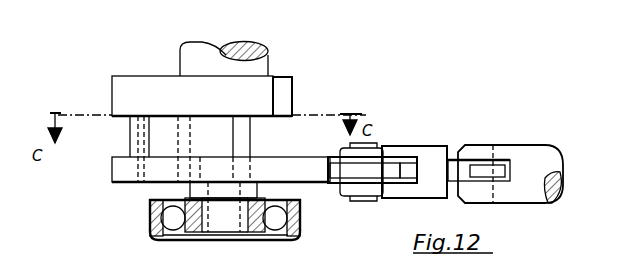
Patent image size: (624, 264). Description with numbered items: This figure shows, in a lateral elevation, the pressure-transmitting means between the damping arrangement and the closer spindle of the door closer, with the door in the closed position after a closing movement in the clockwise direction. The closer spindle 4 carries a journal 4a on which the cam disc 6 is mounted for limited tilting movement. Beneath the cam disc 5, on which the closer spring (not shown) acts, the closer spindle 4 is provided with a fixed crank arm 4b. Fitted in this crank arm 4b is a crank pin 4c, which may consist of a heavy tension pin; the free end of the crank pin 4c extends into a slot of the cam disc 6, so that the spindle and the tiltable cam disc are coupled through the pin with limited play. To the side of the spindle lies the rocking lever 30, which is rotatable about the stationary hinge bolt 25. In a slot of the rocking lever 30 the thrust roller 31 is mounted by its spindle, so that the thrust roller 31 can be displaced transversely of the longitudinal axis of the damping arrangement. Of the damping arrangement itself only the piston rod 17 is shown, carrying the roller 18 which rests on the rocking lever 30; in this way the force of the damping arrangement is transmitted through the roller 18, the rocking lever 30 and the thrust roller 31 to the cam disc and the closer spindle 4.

The closer spindle 4 is at (264, 65).
The journal 4a is at (235, 177).
The crank arm 4b is at (250, 123).
The crank pin 4c is at (133, 129).
The cam disc 5 is at (127, 85).
The cam disc 6 is at (120, 167).
The piston rod 17 is at (541, 152).
The roller 18 is at (475, 170).
The hinge bolt 25 is at (374, 263).
The rocking lever 30 is at (432, 152).
The thrust roller 31 is at (345, 172).